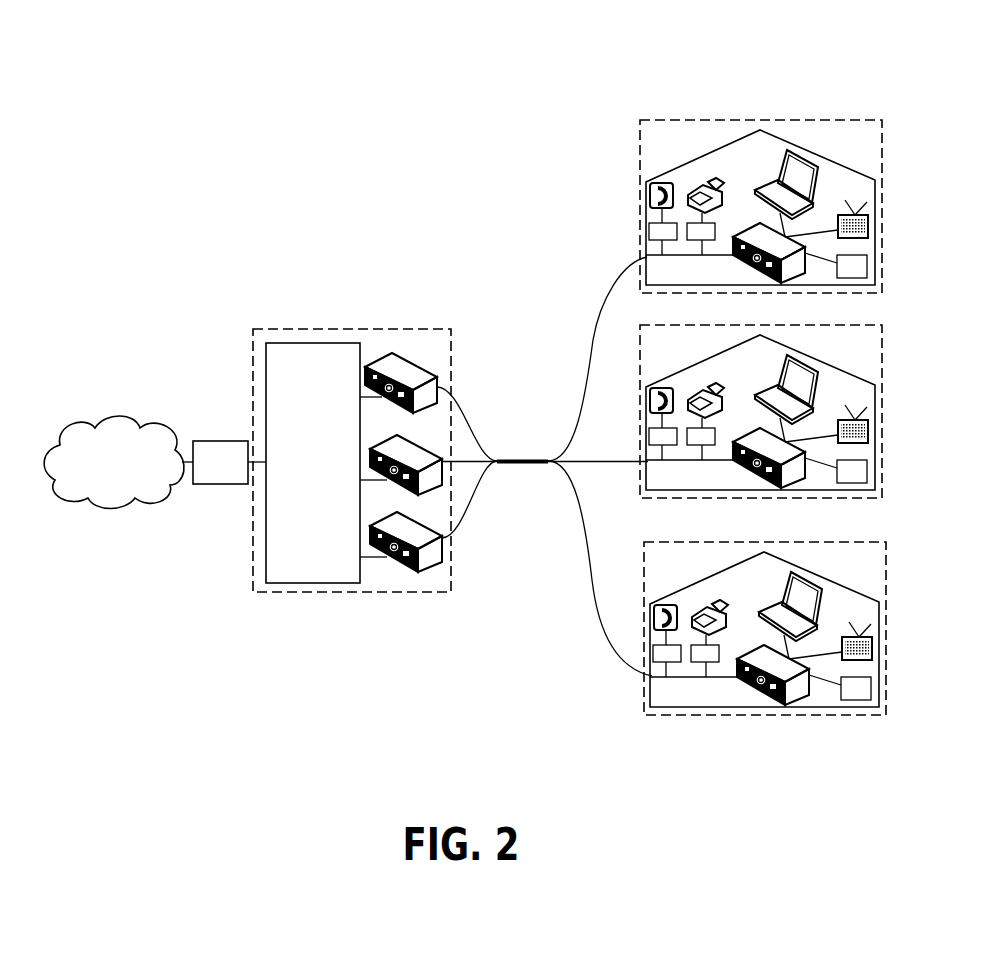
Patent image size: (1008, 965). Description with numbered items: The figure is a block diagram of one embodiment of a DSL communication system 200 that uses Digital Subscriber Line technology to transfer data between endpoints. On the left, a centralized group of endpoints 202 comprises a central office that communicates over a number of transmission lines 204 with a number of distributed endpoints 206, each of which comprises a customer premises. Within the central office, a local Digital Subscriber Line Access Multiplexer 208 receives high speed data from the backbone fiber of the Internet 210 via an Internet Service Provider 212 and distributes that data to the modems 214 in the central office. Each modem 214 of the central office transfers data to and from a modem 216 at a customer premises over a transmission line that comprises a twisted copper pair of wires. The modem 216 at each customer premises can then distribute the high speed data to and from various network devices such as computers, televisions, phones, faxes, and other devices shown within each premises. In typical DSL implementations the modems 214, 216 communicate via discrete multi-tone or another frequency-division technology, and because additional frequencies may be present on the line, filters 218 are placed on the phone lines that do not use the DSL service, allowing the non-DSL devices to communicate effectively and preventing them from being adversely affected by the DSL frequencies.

The DSL communication system 200 is at (178, 57).
The centralized group of endpoints 202 is at (277, 326).
The transmission lines 204 is at (535, 280).
The distributed endpoints 206 is at (674, 119).
The Digital Subscriber Line Access Multiplexer 208 is at (313, 340).
The Internet 210 is at (114, 416).
The Internet Service Provider 212 is at (221, 439).
The modems 214 is at (415, 365).
The modem 216 is at (765, 275).
The filters 218 is at (648, 232).